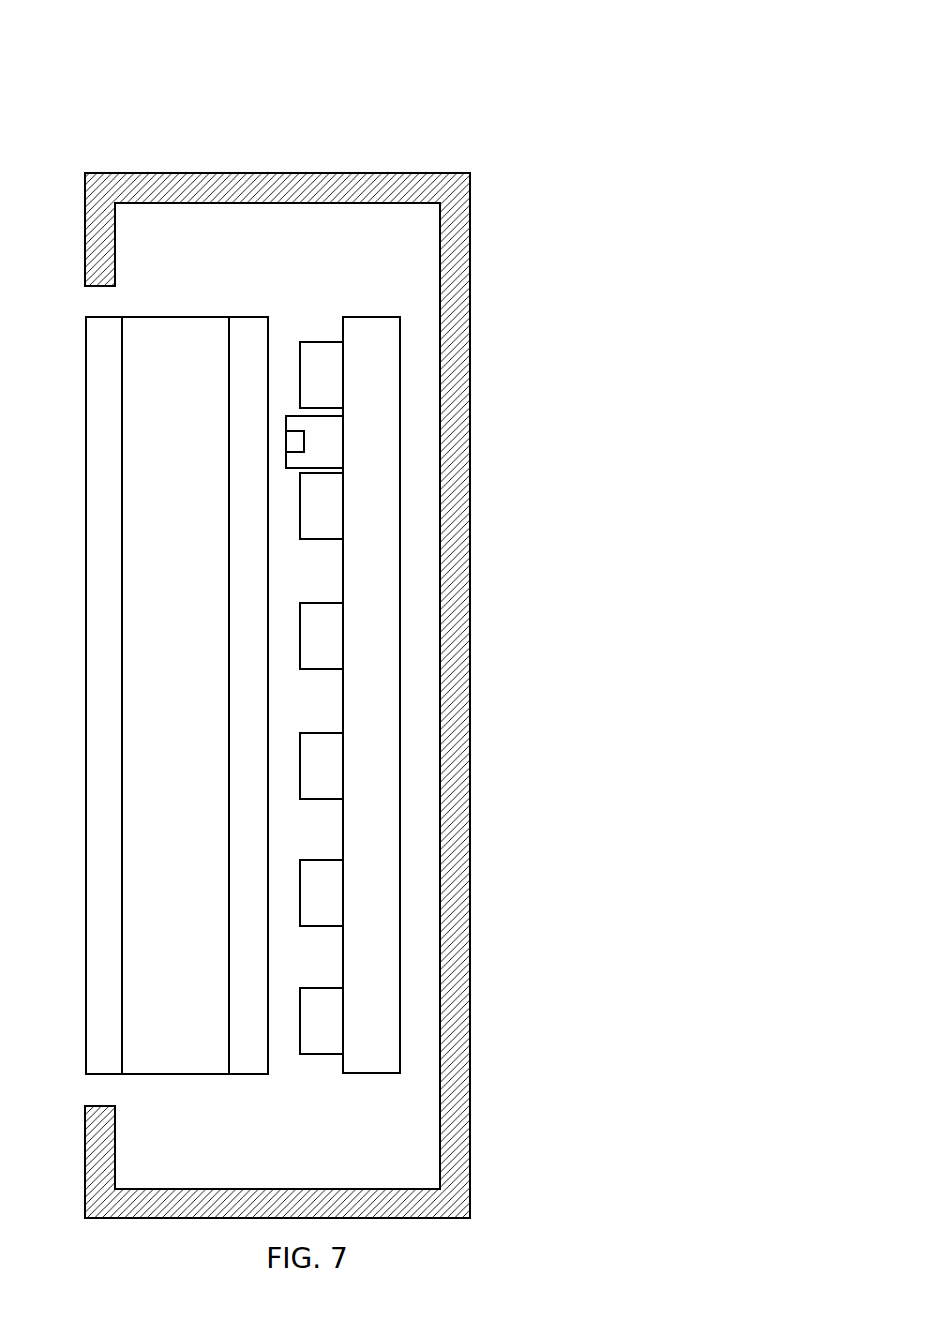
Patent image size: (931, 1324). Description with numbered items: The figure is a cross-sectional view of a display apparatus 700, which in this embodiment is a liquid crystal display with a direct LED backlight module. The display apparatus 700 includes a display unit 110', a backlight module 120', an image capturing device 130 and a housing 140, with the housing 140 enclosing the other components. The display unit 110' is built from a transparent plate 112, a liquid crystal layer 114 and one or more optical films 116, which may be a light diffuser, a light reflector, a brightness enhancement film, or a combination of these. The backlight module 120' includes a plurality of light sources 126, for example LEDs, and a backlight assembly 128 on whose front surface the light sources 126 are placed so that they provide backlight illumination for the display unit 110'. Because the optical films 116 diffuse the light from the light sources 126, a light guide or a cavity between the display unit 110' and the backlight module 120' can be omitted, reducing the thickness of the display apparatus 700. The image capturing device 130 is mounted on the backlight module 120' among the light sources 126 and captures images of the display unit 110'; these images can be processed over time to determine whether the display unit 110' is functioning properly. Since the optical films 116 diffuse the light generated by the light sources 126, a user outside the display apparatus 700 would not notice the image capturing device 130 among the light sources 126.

The display apparatus 700 is at (788, 29).
The housing 140 is at (470, 270).
The display unit 110' is at (177, 570).
The transparent plate 112 is at (103, 317).
The liquid crystal layer 114 is at (208, 317).
The optical films 116 is at (252, 317).
The backlight module 120' is at (363, 571).
The light sources 126 is at (330, 340).
The backlight assembly 128 is at (387, 317).
The image capturing device 130 is at (342, 433).